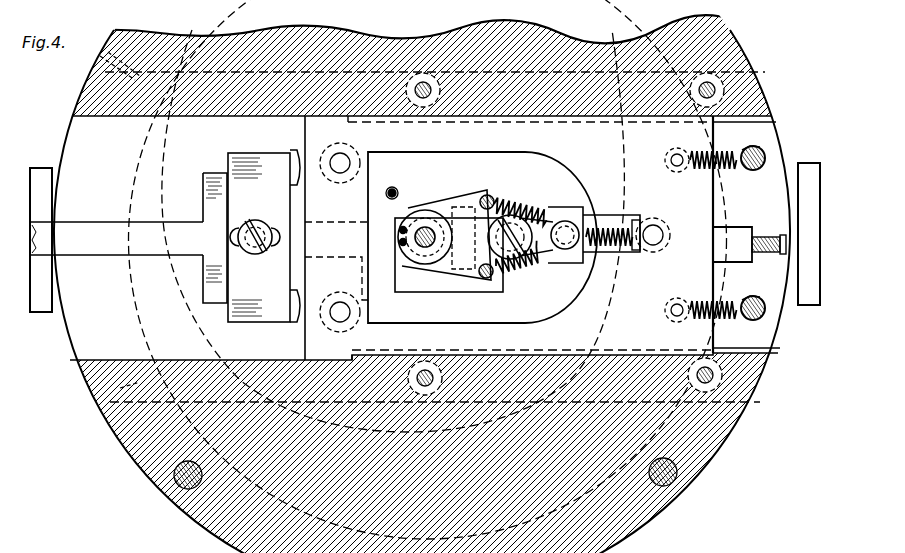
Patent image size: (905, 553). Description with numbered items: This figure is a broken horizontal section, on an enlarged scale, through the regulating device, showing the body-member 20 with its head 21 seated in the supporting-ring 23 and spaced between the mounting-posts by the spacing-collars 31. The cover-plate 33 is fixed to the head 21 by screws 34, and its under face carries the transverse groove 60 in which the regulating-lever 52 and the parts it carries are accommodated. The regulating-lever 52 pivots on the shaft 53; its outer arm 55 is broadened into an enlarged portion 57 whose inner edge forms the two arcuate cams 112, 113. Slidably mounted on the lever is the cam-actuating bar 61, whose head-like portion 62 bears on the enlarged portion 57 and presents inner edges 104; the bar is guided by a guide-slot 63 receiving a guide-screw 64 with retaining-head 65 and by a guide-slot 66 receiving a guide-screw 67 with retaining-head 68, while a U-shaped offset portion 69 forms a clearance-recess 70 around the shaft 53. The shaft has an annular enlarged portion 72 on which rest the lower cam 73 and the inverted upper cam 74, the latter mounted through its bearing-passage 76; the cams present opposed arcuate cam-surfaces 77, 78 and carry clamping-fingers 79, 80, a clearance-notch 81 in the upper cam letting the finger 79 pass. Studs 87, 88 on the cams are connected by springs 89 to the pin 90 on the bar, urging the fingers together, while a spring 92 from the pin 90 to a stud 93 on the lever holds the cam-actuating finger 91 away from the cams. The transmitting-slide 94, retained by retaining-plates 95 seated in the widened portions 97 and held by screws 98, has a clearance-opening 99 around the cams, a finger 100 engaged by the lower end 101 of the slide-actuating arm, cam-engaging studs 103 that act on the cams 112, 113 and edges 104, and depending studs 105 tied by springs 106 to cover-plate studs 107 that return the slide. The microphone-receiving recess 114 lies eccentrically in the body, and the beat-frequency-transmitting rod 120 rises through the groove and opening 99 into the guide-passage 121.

The body-member 20 is at (140, 318).
The head 21 is at (62, 332).
The supporting-ring 23 is at (136, 300).
The spacing-collars 31 is at (48, 168).
The cover-plate 33 is at (128, 445).
The screws 34 is at (677, 474).
The regulating-lever 52 is at (165, 262).
The shaft 53 is at (430, 248).
The outer arm 55 is at (97, 222).
The enlarged portion 57 is at (203, 209).
The transverse groove 60 is at (197, 116).
The cam-actuating bar 61 is at (362, 270).
The head-like portion 62 is at (228, 270).
The longitudinal guide-slot 63 is at (265, 251).
The guide-screw 64 is at (244, 251).
The retaining-head 65 is at (256, 219).
The longitudinal guide-slot 66 is at (562, 250).
The guide-screw 67 is at (541, 256).
The retaining-head 68 is at (552, 264).
The U-shaped offset portion 69 is at (445, 323).
The clearance-recess 70 is at (400, 262).
The annular enlarged portion 72 is at (444, 210).
The lower cam 73 is at (483, 270).
The upper cam 74 is at (465, 190).
The bearing-passage 76 is at (431, 222).
The arcuate cam-surface 77 is at (485, 258).
The arcuate cam-surface 78 is at (484, 221).
The clamping-finger 79 is at (403, 226).
The clamping-finger 80 is at (416, 262).
The clearance-notch 81 is at (412, 225).
The stud 87 is at (487, 280).
The stud 88 is at (488, 194).
The springs 89 is at (527, 206).
The pin 90 is at (541, 222).
The cam-actuating finger 91 is at (470, 238).
The spring 92 is at (607, 252).
The stud 93 is at (645, 246).
The transmitting-slide 94 is at (305, 335).
The retaining-plates 95 is at (780, 118).
The widened portions of groove 97 is at (745, 78).
The screws 98 is at (423, 100).
The clearance-opening 99 is at (548, 320).
The finger 100 is at (734, 262).
The lower end of slide-actuating arm 101 is at (777, 237).
The cam-engaging studs 103 is at (339, 173).
The inner edges 104 is at (296, 150).
The depending studs 105 is at (665, 160).
The springs 106 is at (718, 168).
The studs 107 is at (752, 146).
The arcuate cam 112 is at (296, 192).
The arcuate cam 113 is at (297, 295).
The microphone-receiving recess 114 is at (212, 325).
The beat-frequency-transmitting rod 120 is at (389, 190).
The guide-passage 121 is at (396, 189).